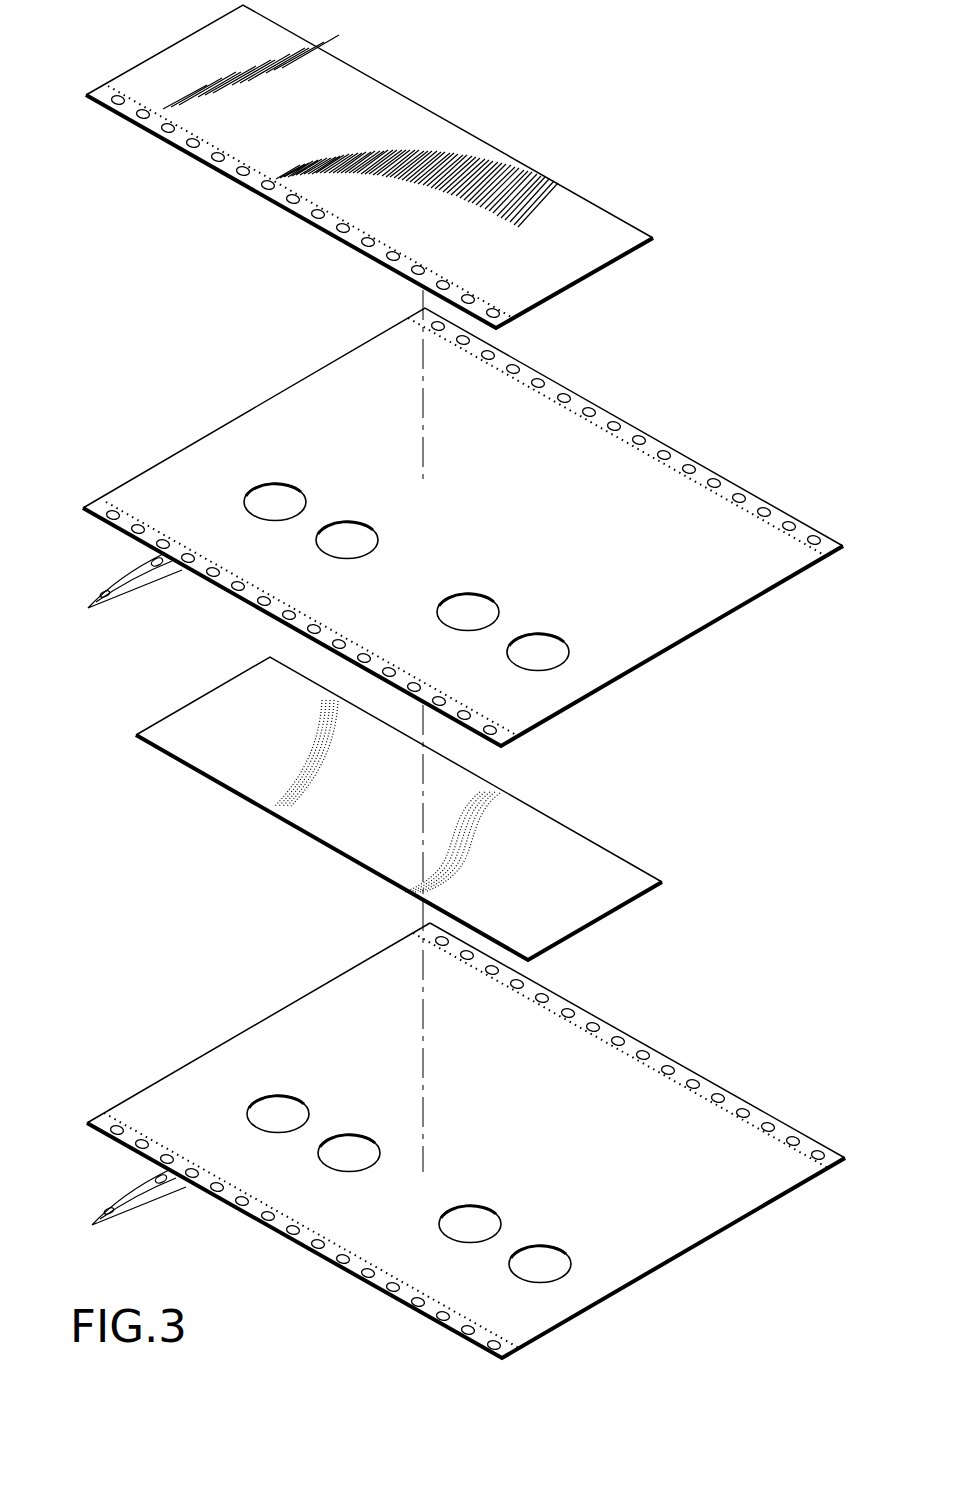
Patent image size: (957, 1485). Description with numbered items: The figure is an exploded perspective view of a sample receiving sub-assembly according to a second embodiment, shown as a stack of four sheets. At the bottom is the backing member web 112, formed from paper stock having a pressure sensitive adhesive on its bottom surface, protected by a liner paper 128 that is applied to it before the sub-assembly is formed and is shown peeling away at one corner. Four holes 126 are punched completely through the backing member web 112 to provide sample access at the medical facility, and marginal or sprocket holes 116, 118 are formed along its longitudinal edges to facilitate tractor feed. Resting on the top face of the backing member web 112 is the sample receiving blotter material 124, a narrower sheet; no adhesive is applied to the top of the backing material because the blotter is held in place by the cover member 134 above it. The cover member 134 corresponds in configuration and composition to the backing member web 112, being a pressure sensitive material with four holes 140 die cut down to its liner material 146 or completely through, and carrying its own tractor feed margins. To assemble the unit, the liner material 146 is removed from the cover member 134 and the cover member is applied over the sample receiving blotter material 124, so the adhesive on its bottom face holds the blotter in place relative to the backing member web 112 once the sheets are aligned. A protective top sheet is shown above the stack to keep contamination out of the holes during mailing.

The backing member web 112 is at (693, 1037).
The marginal or sprocket holes 116 is at (97, 1110).
The marginal or sprocket holes 118 is at (413, 922).
The sample receiving blotter material 124 is at (602, 825).
The holes 126 is at (331, 1123).
The liner paper 128 is at (138, 1188).
The cover member 134 is at (671, 427).
The holes 140 is at (333, 517).
The liner material 146 is at (128, 577).